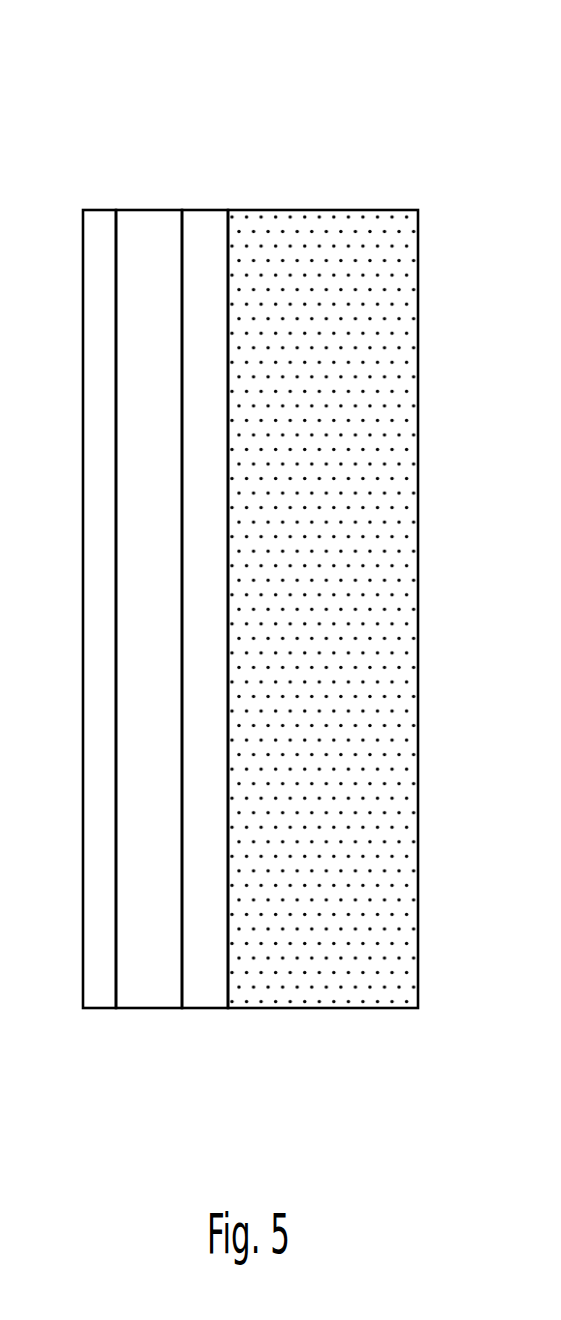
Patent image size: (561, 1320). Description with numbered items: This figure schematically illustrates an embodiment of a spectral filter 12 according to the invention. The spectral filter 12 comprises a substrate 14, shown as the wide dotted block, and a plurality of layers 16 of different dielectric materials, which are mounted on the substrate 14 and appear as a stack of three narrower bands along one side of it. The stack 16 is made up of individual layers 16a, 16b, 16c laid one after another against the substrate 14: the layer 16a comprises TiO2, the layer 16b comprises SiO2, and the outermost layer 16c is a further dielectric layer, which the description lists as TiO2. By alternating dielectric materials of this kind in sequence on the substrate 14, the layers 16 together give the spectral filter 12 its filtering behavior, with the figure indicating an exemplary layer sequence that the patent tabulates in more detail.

The spectral filter 12 is at (407, 108).
The substrate 14 is at (333, 992).
The plurality of layers 16 is at (228, 1013).
The layer 16a is at (209, 208).
The layer 16b is at (155, 208).
The layer 16c is at (98, 208).